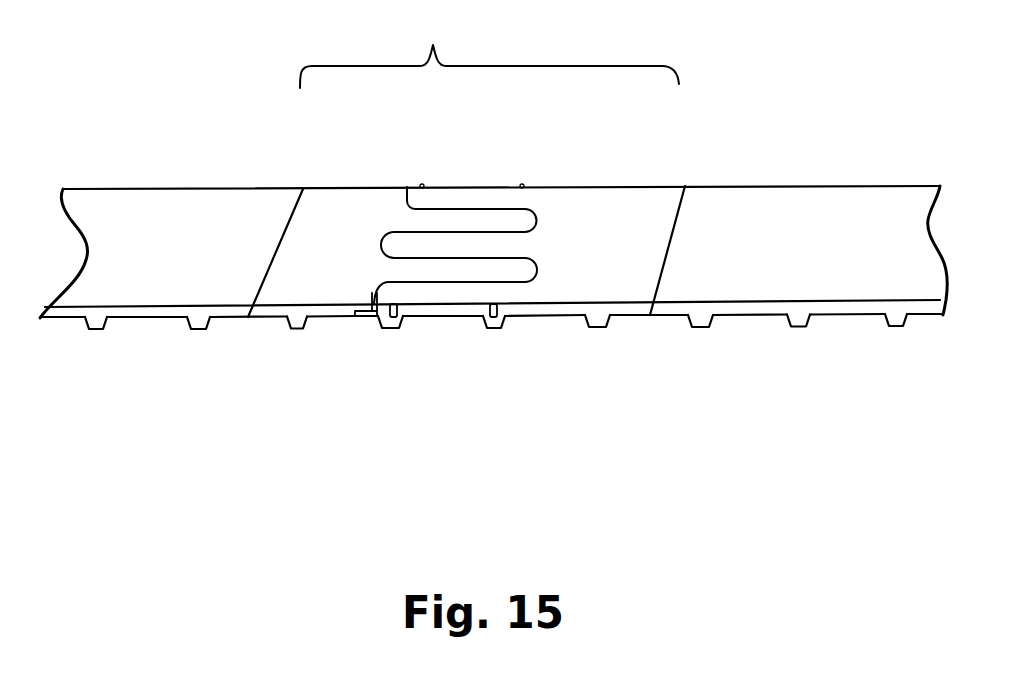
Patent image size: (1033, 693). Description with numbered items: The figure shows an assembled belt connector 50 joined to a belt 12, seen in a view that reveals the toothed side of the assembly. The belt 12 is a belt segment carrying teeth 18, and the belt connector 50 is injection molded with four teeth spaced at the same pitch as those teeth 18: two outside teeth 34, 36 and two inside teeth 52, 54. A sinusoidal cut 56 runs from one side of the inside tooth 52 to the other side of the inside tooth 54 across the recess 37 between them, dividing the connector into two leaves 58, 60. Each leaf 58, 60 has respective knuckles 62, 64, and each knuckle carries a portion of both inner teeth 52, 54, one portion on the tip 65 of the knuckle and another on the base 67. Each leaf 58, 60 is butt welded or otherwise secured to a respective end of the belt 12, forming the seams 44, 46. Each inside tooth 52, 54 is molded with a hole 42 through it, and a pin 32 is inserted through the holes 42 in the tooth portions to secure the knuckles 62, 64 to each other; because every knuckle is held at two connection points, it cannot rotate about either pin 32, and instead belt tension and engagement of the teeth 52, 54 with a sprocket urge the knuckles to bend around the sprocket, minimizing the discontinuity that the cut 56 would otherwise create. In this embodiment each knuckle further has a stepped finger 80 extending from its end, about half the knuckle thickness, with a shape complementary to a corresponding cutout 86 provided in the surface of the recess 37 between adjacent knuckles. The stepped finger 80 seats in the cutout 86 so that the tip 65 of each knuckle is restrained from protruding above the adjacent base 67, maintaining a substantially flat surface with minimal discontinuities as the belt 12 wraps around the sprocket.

The belt 12 is at (129, 200).
The teeth 18 is at (97, 329).
The pin 32 is at (399, 311).
The outside tooth 34 is at (290, 325).
The outside tooth 36 is at (598, 321).
The recess 37 is at (357, 292).
The hole 42 is at (397, 315).
The seam 44 is at (280, 232).
The seam 46 is at (687, 210).
The belt connector 50 is at (489, 52).
The inside tooth 52 is at (372, 318).
The inside tooth 54 is at (486, 316).
The sinusoidal cut 56 is at (467, 231).
The leaf 58 is at (333, 212).
The leaf 60 is at (607, 210).
The knuckle 62 is at (497, 265).
The knuckle 64 is at (428, 287).
The tip 65 is at (378, 243).
The base 67 is at (408, 225).
The stepped finger 80 is at (363, 330).
The cutout 86 is at (350, 313).